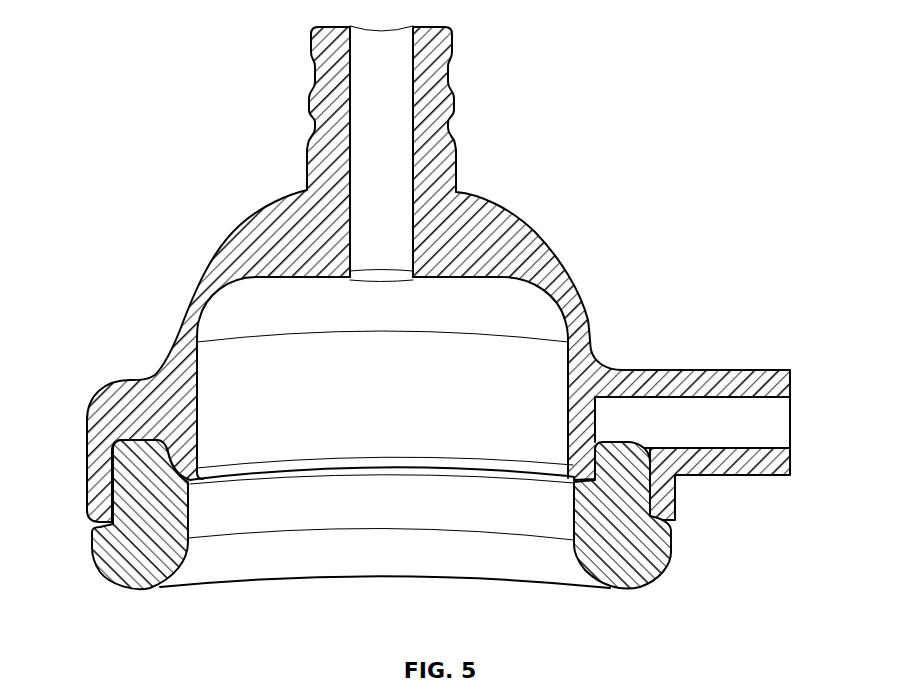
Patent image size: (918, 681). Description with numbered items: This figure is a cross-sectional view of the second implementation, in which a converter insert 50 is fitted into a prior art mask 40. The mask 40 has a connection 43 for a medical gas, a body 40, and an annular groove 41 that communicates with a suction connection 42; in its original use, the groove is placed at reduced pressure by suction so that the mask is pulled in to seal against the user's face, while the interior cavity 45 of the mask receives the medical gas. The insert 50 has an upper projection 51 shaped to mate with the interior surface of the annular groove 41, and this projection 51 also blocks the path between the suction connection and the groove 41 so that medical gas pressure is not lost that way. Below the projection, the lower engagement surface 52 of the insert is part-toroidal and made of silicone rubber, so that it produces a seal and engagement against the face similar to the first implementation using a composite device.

The mask 40 is at (588, 322).
The annular groove 41 is at (142, 440).
The suction connection 42 is at (763, 427).
The connection for a medical gas 43 is at (400, 78).
The inner cavity 45 is at (515, 315).
The converter insert 50 is at (675, 538).
The upper projection 51 is at (118, 440).
The engagement surface 52 is at (648, 590).